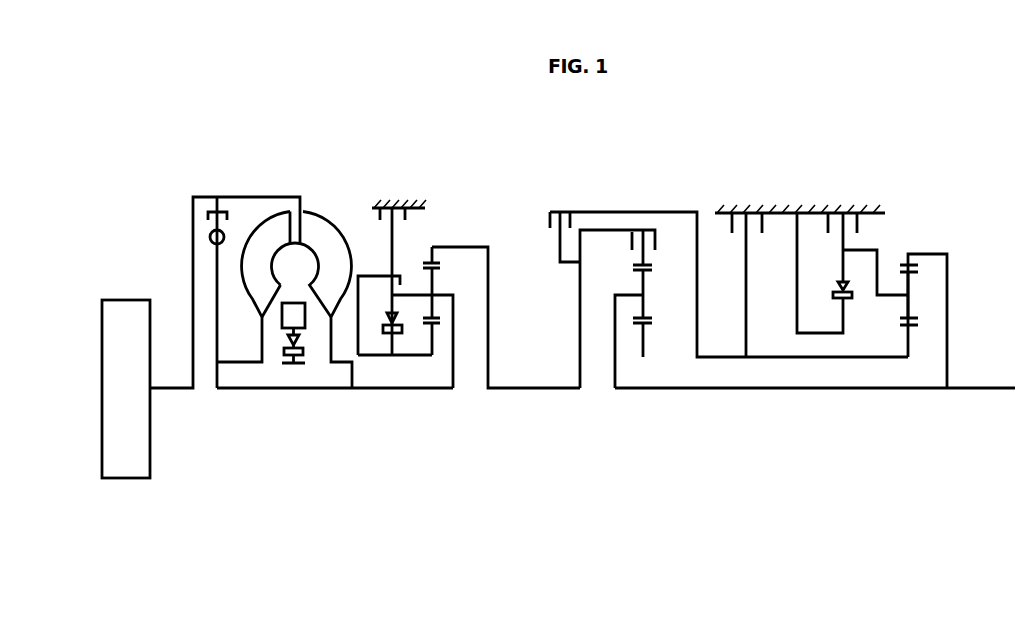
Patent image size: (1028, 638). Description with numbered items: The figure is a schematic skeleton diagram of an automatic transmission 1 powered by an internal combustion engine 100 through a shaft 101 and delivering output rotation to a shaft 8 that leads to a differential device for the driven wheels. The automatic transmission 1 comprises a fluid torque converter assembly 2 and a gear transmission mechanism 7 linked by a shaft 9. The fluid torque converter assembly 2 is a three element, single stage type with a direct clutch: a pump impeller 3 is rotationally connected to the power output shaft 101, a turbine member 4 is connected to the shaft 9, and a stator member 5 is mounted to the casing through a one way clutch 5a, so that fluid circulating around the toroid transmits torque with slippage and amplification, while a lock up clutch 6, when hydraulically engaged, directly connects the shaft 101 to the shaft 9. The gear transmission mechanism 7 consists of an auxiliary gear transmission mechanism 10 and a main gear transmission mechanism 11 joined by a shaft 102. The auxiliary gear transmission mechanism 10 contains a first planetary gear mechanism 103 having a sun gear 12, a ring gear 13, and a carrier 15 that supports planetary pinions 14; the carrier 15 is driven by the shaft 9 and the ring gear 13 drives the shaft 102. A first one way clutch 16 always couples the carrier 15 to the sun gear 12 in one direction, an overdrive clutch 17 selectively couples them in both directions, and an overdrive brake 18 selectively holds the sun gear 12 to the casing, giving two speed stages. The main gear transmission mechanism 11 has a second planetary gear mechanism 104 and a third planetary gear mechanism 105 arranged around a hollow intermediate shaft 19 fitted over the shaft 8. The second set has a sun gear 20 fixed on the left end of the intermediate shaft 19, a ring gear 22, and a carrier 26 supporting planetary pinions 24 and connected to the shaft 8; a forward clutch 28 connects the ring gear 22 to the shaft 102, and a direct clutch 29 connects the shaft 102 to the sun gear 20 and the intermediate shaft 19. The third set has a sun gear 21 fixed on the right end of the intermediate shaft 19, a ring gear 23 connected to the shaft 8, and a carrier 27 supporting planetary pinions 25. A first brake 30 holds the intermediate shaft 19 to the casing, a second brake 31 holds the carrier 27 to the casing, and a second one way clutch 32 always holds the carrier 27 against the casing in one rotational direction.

The automatic transmission 1 is at (970, 515).
The fluid torque converter assembly 2 is at (275, 315).
The pump impeller 3 is at (312, 222).
The turbine member 4 is at (262, 297).
The stator member 5 is at (283, 312).
The one way clutch 5a is at (310, 367).
The lock up clutch 6 is at (218, 309).
The gear transmission mechanism 7 is at (973, 453).
The power output shaft 8 is at (1003, 387).
The shaft 9 is at (375, 388).
The auxiliary gear transmission mechanism 10 is at (466, 306).
The main gear transmission mechanism 11 is at (725, 304).
The sun gear 12 is at (441, 323).
The ring gear 13 is at (427, 262).
The planetary pinions 14 is at (440, 268).
The carrier 15 is at (454, 322).
The one way clutch F0 16 is at (400, 317).
The clutch C0 17 is at (389, 276).
The brake B0 18 is at (385, 205).
The hollow intermediate shaft 19 is at (828, 360).
The sun gear 20 is at (652, 322).
The sun gear 21 is at (917, 340).
The ring gear 22 is at (652, 268).
The ring gear 23 is at (919, 268).
The planetary pinions 24 is at (645, 299).
The planetary pinions 25 is at (923, 295).
The carrier 26 is at (614, 305).
The carrier 27 is at (881, 262).
The clutch C1 28 is at (642, 229).
The clutch C2 29 is at (568, 210).
The brake B1 30 is at (753, 211).
The brake B2 31 is at (857, 218).
The one-way clutch F1 32 is at (852, 296).
The internal combustion engine 100 is at (135, 479).
The power output shaft 101 is at (169, 386).
The shaft 102 is at (534, 380).
The first planetary gear mechanism 103 is at (459, 246).
The second planetary gear mechanism 104 is at (678, 210).
The third planetary gear mechanism 105 is at (935, 246).